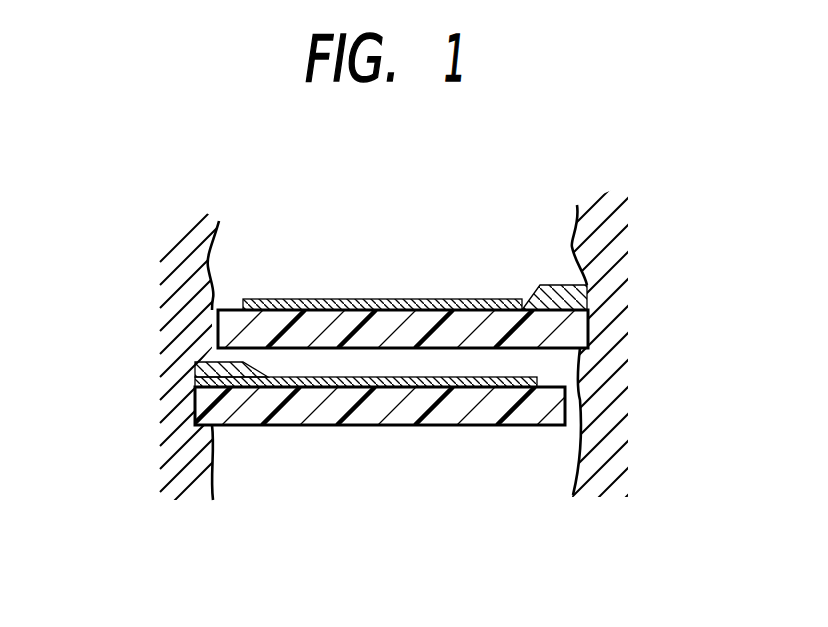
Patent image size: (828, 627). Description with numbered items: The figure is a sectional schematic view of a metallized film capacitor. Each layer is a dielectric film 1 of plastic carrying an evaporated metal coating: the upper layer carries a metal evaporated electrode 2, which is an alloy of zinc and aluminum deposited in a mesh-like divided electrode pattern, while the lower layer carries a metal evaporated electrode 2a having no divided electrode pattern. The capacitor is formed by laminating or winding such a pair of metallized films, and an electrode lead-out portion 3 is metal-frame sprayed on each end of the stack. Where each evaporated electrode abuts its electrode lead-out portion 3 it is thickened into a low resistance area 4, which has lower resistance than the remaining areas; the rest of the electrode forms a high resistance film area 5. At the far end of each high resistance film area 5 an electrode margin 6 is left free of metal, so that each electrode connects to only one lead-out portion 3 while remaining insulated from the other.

The dielectric film 1 is at (490, 402).
The metal evaporated electrode 2 is at (400, 299).
The metal evaporated electrode having no divided electrode pattern 2a is at (386, 388).
The electrode lead-out portion 3 is at (182, 293).
The low resistance area 4 is at (200, 366).
The high resistance film area 5 is at (303, 377).
The electrode margin 6 is at (231, 297).